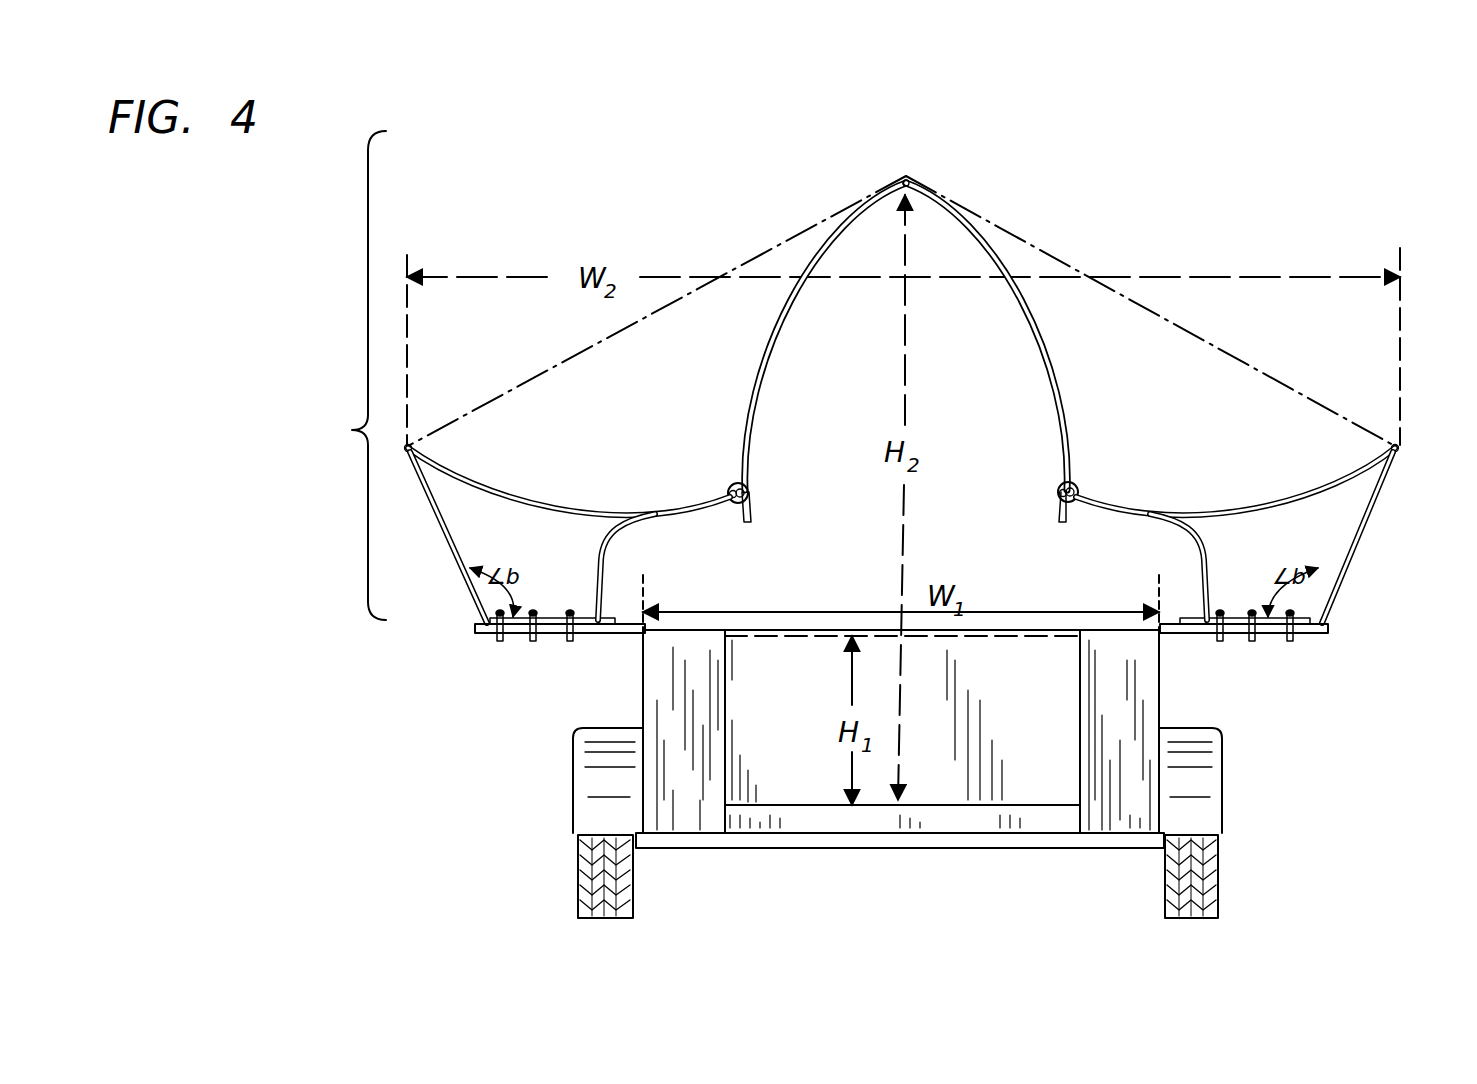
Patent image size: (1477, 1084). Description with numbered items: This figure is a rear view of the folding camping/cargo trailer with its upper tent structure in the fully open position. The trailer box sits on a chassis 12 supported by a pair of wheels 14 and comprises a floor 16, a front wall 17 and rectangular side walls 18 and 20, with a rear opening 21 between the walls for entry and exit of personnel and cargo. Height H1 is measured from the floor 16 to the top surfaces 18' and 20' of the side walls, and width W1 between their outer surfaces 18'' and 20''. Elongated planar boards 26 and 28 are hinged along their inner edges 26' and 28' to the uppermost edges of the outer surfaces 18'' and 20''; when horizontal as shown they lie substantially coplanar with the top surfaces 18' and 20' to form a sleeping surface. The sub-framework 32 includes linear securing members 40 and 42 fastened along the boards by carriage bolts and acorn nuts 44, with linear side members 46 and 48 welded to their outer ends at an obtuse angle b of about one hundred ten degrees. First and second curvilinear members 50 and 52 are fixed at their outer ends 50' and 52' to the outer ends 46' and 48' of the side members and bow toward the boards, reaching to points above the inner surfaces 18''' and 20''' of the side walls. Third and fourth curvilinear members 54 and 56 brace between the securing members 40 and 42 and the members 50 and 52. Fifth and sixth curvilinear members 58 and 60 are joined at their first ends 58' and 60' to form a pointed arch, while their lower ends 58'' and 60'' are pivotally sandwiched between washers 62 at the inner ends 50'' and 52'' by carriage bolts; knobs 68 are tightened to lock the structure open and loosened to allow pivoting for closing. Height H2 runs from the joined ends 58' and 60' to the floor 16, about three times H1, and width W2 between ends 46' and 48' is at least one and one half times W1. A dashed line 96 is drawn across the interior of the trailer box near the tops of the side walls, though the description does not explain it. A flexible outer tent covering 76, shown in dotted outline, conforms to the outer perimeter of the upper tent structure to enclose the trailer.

The chassis 12 is at (770, 850).
The wheels 14 is at (578, 885).
The floor 16 is at (925, 820).
The front wall 17 is at (1030, 702).
The side wall 18 is at (684, 765).
The top surface of side wall 18' is at (716, 592).
The outer surface of side wall 18'' is at (616, 708).
The inner surface of side wall 18''' is at (771, 734).
The side wall 20 is at (1119, 761).
The top surface of side wall 20' is at (1096, 588).
The outer surface of side wall 20'' is at (1191, 703).
The inner surface of side wall 20''' is at (1011, 739).
The rear opening 21 is at (1020, 775).
The planar board 26 is at (535, 689).
The inner edge of board 26' is at (612, 657).
The planar board 28 is at (1249, 668).
The inner edge of board 28' is at (1187, 657).
The sub-framework 32 is at (342, 375).
The first securing member 40 is at (548, 617).
The second securing member 42 is at (1240, 617).
The carriage bolts and acorn nuts 44 is at (570, 642).
The first side member 46 is at (448, 537).
The outer end of first side member 46' is at (396, 496).
The second side member 48 is at (1373, 537).
The outer end of second side member 48' is at (1434, 479).
The first curvilinear member 50 is at (569, 477).
The outer end of first curvilinear member 50' is at (453, 442).
The inner end of first curvilinear member 50'' is at (693, 463).
The second curvilinear member 52 is at (1235, 477).
The outer end of second curvilinear member 52' is at (1358, 439).
The inner end of second curvilinear member 52'' is at (1126, 474).
The third curvilinear member 54 is at (612, 558).
The fourth curvilinear member 56 is at (1192, 535).
The fifth curvilinear member 58 is at (809, 336).
The first end of fifth curvilinear member 58' is at (861, 168).
The second end of fifth curvilinear member 58'' is at (789, 507).
The sixth curvilinear member 60 is at (993, 336).
The first end of sixth curvilinear member 60' is at (960, 159).
The second end of sixth curvilinear member 60'' is at (1027, 499).
The washer 62 is at (735, 506).
The knob 68 is at (748, 484).
The flexible outer tent covering 76 is at (1125, 245).
The load line 96 is at (770, 640).